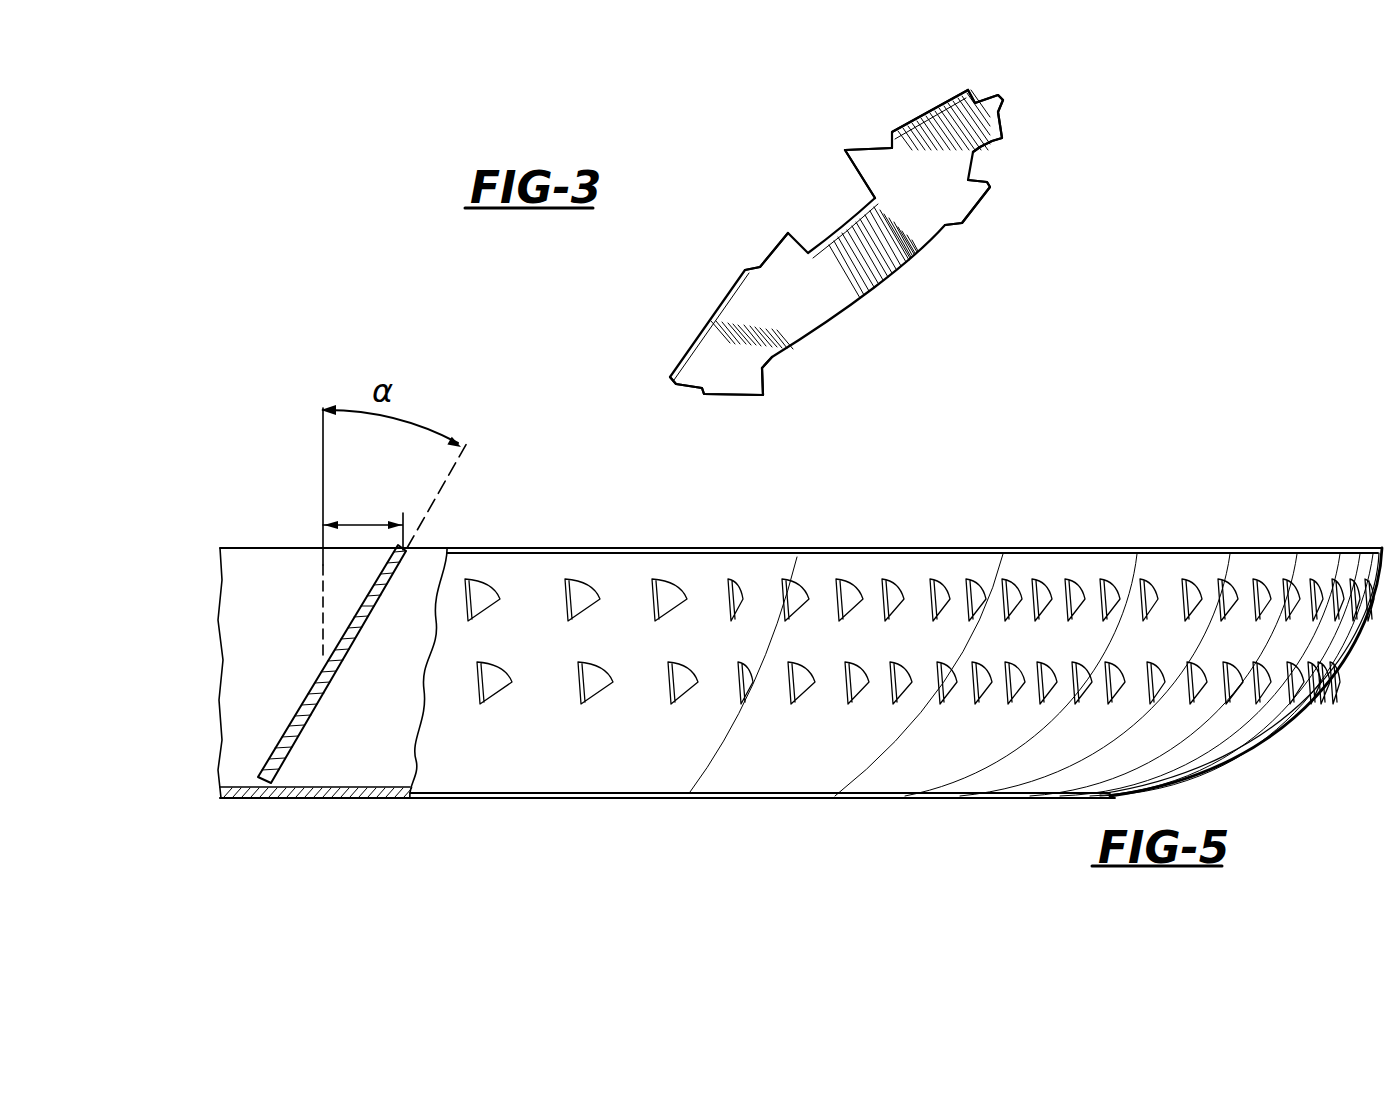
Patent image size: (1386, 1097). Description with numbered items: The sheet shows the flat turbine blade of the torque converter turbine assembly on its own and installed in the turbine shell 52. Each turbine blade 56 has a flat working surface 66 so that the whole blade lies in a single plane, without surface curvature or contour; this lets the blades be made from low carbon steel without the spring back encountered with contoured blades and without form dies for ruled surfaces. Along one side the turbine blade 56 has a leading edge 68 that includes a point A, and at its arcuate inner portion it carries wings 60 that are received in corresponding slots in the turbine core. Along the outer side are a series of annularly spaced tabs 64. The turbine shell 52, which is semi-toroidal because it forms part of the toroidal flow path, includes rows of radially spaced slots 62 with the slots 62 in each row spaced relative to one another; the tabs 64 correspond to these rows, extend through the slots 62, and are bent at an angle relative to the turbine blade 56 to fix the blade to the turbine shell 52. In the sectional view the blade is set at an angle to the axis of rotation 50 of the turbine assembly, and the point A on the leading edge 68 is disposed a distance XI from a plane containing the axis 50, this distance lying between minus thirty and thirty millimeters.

In FIG. 5, the axis 50 is at (323, 463).
In FIG. 5, the turbine shell 52 is at (802, 770).
In FIG. 3, the turbine blade 56 is at (921, 258).
In FIG. 5, the turbine blade 56 is at (303, 690).
In FIG. 3, the wing 60 is at (846, 150).
In FIG. 5, the slot 62 is at (837, 600).
In FIG. 3, the tab 64 is at (1003, 117).
In FIG. 5, the tab 64 is at (480, 588).
In FIG. 3, the flat working surface 66 is at (877, 270).
In FIG. 5, the flat working surface 66 is at (352, 621).
In FIG. 3, the leading edge 68 is at (950, 92).
In FIG. 3, the point A is at (927, 106).
In FIG. 5, the point A is at (408, 549).
In FIG. 5, the distance XI is at (363, 519).